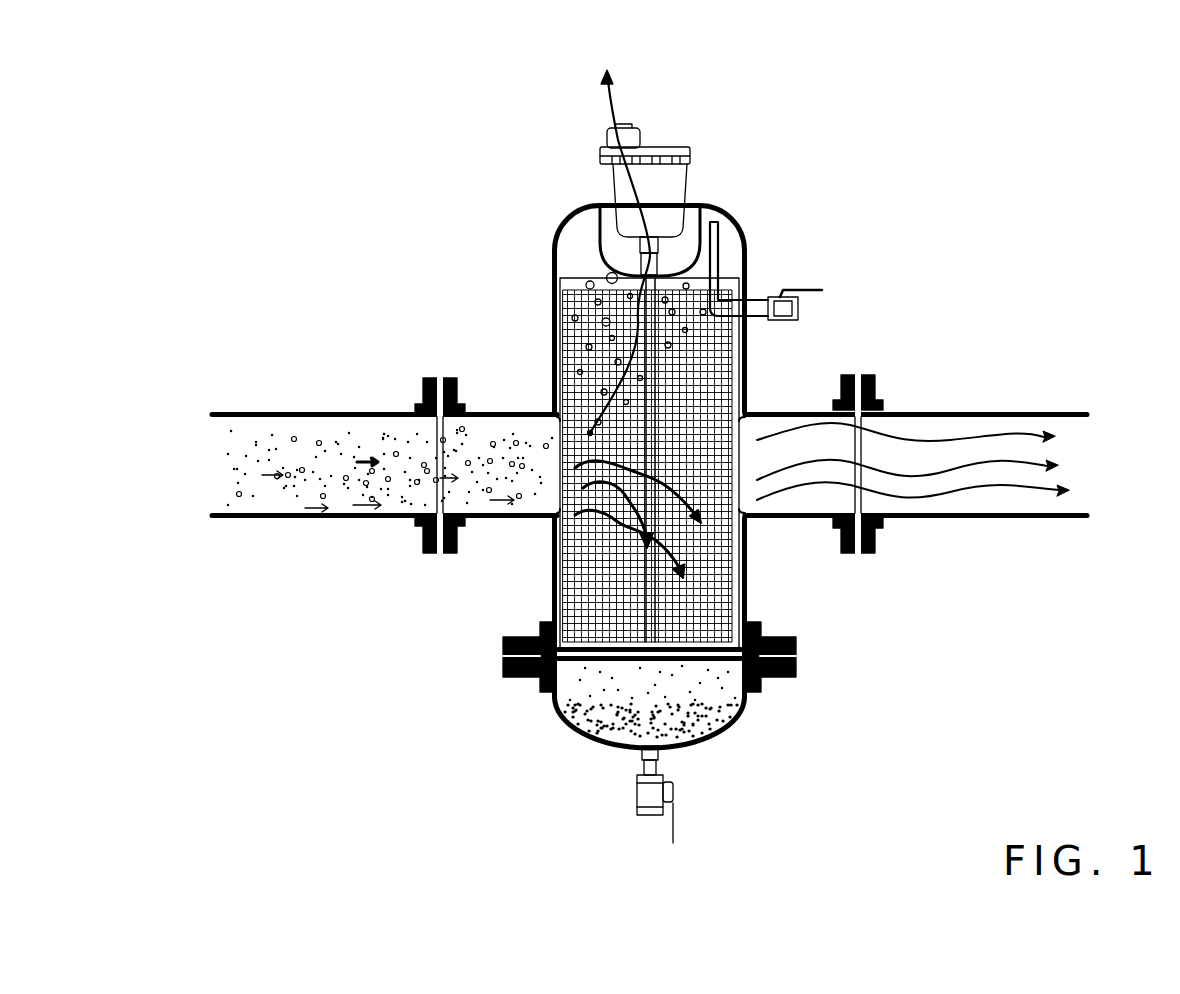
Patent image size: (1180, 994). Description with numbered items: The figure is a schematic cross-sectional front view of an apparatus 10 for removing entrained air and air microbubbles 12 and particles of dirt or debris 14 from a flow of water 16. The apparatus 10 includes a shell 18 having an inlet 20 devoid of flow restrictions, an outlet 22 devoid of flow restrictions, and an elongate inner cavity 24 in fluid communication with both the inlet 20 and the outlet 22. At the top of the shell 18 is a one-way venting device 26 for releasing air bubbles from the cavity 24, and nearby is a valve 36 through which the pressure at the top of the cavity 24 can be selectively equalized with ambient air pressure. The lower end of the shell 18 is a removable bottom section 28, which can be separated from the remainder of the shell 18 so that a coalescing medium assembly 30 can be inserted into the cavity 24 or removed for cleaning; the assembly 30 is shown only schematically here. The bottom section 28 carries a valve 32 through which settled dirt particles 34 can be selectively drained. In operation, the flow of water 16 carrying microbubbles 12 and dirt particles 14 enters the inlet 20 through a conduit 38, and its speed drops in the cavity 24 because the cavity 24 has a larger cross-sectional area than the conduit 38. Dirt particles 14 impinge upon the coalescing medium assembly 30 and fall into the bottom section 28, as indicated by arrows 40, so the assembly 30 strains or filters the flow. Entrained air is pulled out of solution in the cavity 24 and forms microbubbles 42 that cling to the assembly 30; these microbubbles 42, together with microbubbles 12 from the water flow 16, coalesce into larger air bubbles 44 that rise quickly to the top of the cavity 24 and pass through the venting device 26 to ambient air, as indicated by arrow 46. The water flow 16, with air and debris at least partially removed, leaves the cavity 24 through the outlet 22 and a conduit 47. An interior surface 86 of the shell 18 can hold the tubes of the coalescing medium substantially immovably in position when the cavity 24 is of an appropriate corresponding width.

The apparatus 10 is at (852, 158).
The entrained air and air microbubbles 12 is at (483, 427).
The particles of dirt or debris 14 is at (470, 503).
The flow of water 16 is at (363, 477).
The shell 18 is at (552, 253).
The inlet 20 is at (552, 412).
The outlet 22 is at (753, 442).
The elongate inner cavity 24 is at (738, 570).
The one-way venting device 26 is at (672, 185).
The removable bottom section 28 is at (743, 707).
The coalescing medium assembly 30 is at (570, 327).
The valve 32 is at (650, 792).
The settled dirt particles 34 is at (557, 703).
The valve 36 is at (798, 307).
The conduit 38 is at (272, 413).
The arrows 40 is at (590, 567).
The microbubbles 42 is at (572, 378).
The larger air bubbles 44 is at (607, 275).
The arrow 46 is at (613, 110).
The conduit 47 is at (997, 410).
The interior surface 86 is at (747, 590).